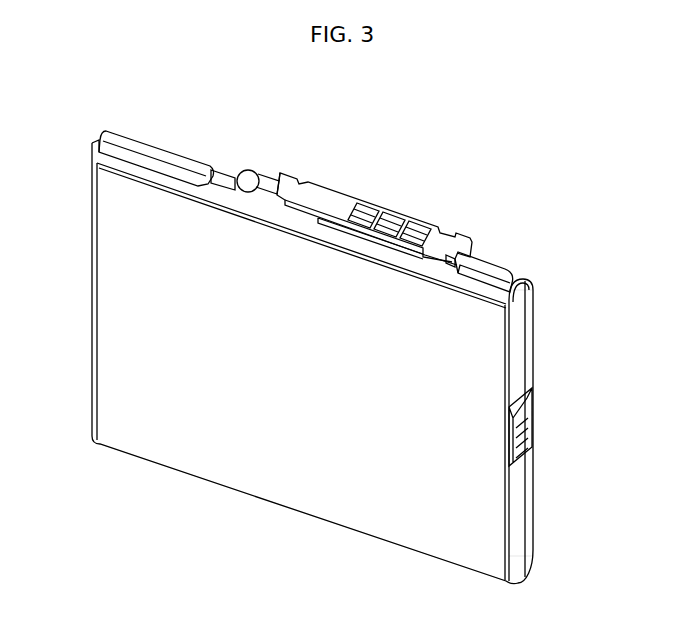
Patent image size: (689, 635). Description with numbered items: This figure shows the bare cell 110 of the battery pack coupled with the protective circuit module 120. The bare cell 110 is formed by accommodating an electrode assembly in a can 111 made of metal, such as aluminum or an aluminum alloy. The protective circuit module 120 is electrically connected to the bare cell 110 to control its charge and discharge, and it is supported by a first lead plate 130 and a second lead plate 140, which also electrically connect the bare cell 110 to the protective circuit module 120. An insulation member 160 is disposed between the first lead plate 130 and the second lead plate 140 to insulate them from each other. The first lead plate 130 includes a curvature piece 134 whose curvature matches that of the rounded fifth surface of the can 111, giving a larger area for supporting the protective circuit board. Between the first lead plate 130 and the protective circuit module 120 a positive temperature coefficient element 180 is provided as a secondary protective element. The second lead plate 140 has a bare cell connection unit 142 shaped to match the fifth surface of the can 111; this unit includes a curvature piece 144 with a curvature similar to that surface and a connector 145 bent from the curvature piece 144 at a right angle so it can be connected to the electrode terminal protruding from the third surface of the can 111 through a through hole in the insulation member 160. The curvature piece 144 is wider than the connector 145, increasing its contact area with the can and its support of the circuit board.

The bare cell 110 is at (296, 512).
The can 111 is at (212, 465).
The protective circuit module 120 is at (362, 193).
The first lead plate 130 is at (149, 148).
The curvature piece 134 is at (112, 142).
The second lead plate 140 is at (498, 258).
The bare cell connection unit 142 is at (600, 266).
The curvature piece 144 is at (518, 266).
The connector 145 is at (521, 326).
The insulation member 160 is at (142, 180).
The PTC element 180 is at (258, 167).